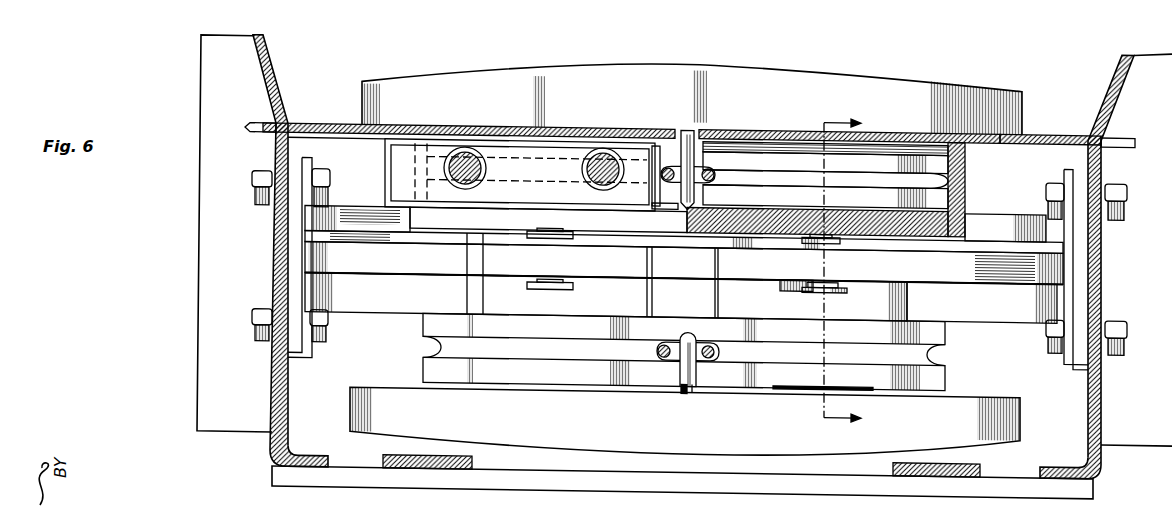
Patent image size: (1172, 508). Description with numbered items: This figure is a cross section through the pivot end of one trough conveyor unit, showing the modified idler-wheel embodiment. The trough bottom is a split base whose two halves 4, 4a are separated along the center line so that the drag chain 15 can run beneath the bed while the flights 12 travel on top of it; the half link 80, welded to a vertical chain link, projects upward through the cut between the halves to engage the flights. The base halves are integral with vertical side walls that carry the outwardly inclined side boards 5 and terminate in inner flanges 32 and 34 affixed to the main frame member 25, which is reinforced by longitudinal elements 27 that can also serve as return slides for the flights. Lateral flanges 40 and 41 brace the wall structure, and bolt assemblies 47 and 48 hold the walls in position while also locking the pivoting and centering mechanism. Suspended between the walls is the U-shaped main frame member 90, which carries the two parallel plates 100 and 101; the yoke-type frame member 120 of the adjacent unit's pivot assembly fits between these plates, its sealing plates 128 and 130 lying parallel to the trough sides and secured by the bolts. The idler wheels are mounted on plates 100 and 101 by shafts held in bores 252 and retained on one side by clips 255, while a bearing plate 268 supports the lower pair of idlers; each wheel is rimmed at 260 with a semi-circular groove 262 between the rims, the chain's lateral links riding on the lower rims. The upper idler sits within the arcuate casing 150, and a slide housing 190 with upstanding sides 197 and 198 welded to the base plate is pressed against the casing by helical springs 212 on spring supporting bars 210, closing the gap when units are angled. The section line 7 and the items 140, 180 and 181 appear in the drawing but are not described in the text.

The base 4 is at (323, 123).
The base 4a is at (1053, 129).
The side walls 5 is at (262, 82).
The section line 7- 7 is at (826, 270).
The flights 12 is at (589, 100).
The drag chain 15 is at (687, 326).
The main frame member 25 is at (627, 476).
The longitudinal reinforcing elements 27 is at (967, 457).
The inner flange 32 is at (302, 456).
The inner flange 34 is at (1058, 460).
The lateral flange 40 is at (240, 256).
The lateral flange 41 is at (1135, 248).
The bolt assemblies 47 is at (323, 178).
The bolt assemblies 48 is at (252, 337).
The half link 80 is at (680, 382).
The main frame member 90 is at (987, 204).
The top plate 100 is at (965, 217).
The underlying plate 101 is at (897, 297).
The frame member 120 is at (385, 255).
The sealing plate 128 is at (1080, 346).
The sealing plate 130 is at (307, 353).
The guide 140 is at (770, 274).
The casing 150 is at (965, 158).
The flange strip 180 is at (1127, 126).
The flange strip 181 is at (254, 131).
The slide housing 190 is at (537, 206).
The upstanding side 197 is at (651, 178).
The upstanding side 198 is at (391, 175).
The spring supporting bar 210 is at (468, 146).
The helical spring 212 is at (612, 147).
The bores 252 is at (838, 278).
The clips 255 is at (835, 284).
The rims 260 is at (820, 182).
The semi-circular groove 262 is at (925, 341).
The bearing plate 268 is at (830, 379).